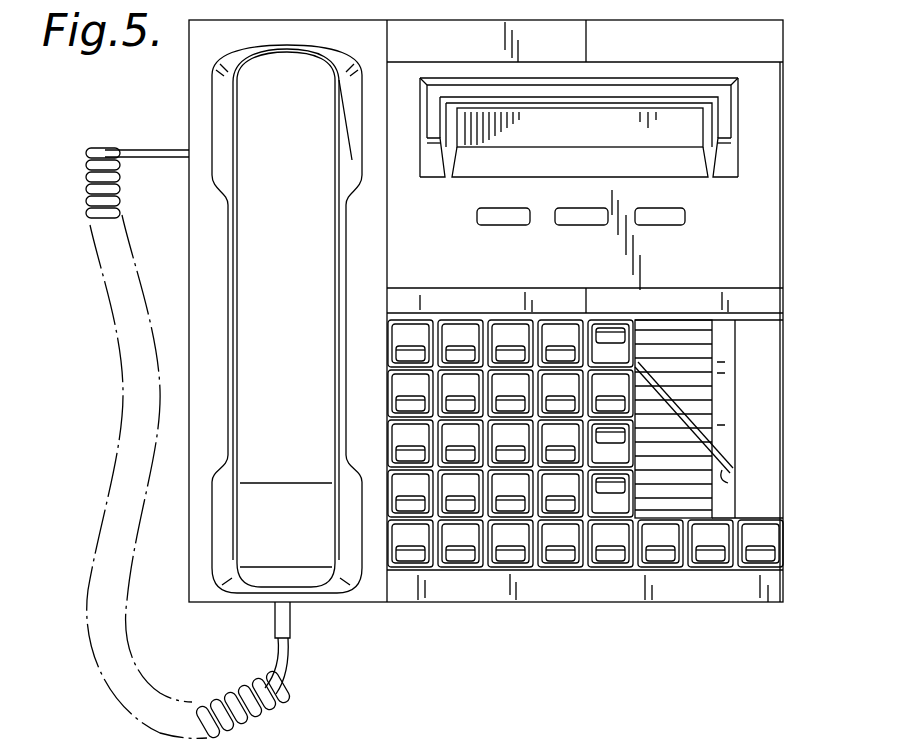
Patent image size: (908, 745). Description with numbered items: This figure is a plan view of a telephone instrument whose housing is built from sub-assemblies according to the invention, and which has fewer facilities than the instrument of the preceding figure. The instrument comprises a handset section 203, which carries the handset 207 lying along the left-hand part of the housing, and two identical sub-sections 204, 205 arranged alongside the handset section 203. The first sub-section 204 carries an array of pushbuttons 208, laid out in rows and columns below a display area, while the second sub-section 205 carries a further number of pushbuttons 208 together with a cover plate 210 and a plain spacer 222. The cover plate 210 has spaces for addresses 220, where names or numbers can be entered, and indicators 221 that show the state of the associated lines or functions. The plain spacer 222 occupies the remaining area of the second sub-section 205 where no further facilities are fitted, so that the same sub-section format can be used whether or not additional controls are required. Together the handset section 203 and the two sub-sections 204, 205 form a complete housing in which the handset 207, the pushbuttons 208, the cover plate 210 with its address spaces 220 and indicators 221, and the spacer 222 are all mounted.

The handset section 203 is at (212, 592).
The first sub-section 204 is at (503, 603).
The second sub-section 205 is at (692, 603).
The handset 207 is at (353, 563).
The pushbuttons 208 is at (615, 563).
The cover plate 210 is at (710, 495).
The spaces for addresses 220 is at (702, 515).
The indicators 221 is at (735, 485).
The plain spacer 222 is at (770, 382).